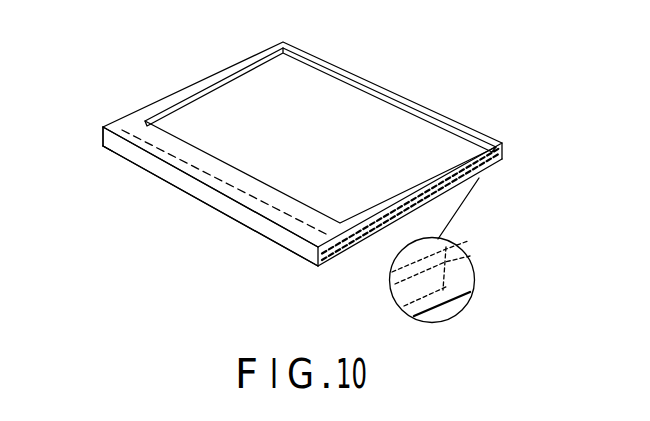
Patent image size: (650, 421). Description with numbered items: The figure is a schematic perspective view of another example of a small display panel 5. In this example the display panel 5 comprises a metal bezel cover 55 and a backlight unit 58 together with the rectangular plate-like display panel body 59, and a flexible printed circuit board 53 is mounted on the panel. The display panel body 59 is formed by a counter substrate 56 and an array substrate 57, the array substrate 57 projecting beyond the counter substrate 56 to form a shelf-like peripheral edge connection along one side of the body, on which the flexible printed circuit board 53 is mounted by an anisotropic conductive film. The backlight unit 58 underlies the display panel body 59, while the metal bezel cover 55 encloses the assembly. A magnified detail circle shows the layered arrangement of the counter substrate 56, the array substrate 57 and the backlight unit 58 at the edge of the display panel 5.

The display panel 5 is at (514, 111).
The flexible printed circuit (FPC) board 53 is at (212, 209).
The metal bezel cover 55 is at (102, 149).
The counter substrate 56 is at (447, 246).
The array substrate 57 is at (466, 272).
The backlight unit 58 is at (472, 295).
The display panel body 59 is at (526, 229).